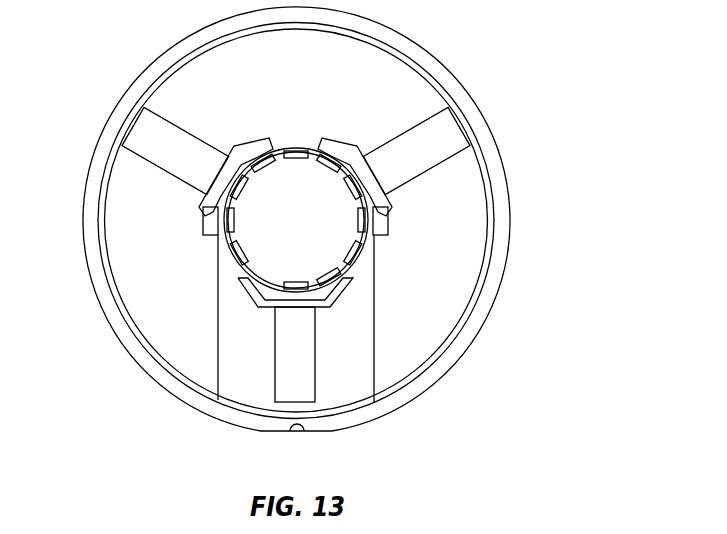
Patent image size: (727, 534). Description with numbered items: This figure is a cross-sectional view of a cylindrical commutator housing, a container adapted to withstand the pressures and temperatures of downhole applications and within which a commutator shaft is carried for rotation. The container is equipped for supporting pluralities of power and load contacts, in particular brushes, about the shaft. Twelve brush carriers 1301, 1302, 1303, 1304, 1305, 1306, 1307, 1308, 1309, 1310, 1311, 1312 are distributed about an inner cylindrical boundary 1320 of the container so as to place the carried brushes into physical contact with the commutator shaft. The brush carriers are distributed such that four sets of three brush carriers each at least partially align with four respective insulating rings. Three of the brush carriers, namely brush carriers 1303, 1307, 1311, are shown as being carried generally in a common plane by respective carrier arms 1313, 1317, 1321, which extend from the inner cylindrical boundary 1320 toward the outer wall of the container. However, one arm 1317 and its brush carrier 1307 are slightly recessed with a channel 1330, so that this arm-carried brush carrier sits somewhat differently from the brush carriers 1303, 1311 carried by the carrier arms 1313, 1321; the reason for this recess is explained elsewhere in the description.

The brush carrier 1301 is at (301, 150).
The brush carrier 1302 is at (326, 160).
The brush carrier 1303 is at (386, 209).
The brush carrier 1304 is at (368, 226).
The brush carrier 1305 is at (363, 250).
The brush carrier 1306 is at (345, 276).
The brush carrier 1307 is at (318, 293).
The brush carrier 1308 is at (252, 290).
The brush carrier 1309 is at (231, 255).
The brush carrier 1310 is at (226, 223).
The brush carrier 1311 is at (204, 216).
The brush carrier 1312 is at (270, 150).
The carrier arm 1313 is at (447, 122).
The carrier arm 1317 is at (314, 390).
The inner cylindrical boundary 1320 is at (289, 137).
The carrier arm 1321 is at (140, 138).
The channel 1330 is at (221, 372).